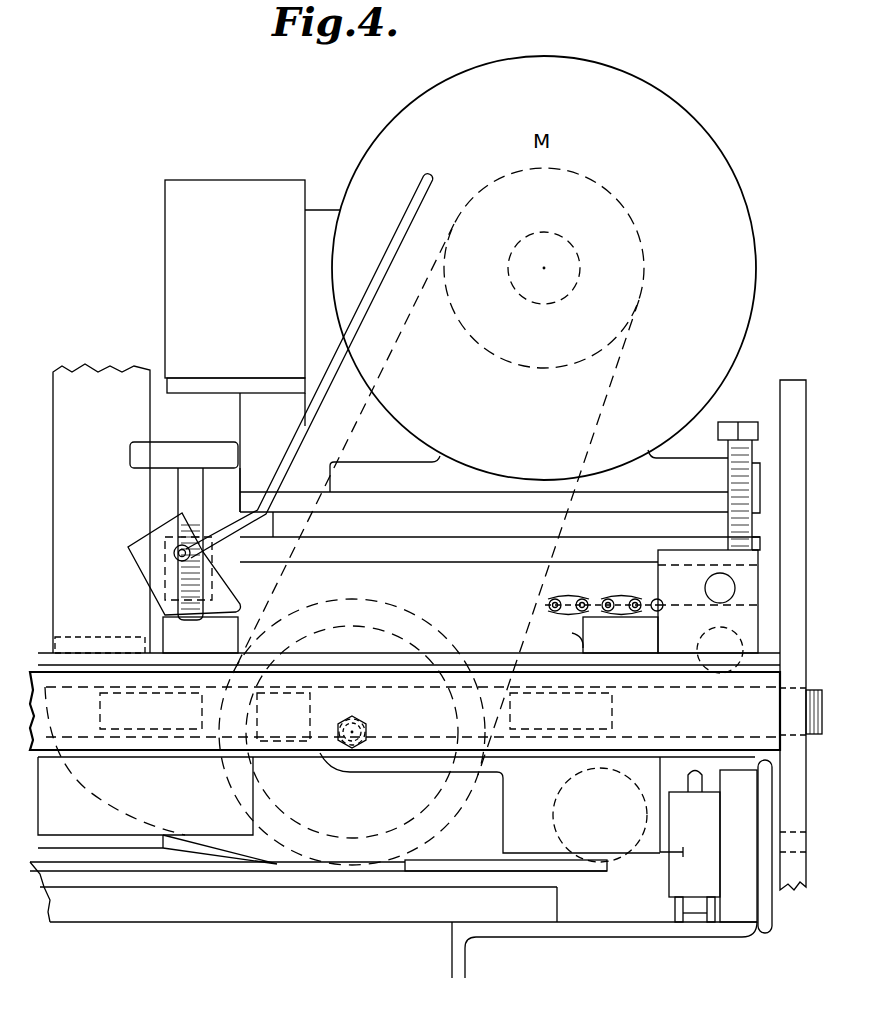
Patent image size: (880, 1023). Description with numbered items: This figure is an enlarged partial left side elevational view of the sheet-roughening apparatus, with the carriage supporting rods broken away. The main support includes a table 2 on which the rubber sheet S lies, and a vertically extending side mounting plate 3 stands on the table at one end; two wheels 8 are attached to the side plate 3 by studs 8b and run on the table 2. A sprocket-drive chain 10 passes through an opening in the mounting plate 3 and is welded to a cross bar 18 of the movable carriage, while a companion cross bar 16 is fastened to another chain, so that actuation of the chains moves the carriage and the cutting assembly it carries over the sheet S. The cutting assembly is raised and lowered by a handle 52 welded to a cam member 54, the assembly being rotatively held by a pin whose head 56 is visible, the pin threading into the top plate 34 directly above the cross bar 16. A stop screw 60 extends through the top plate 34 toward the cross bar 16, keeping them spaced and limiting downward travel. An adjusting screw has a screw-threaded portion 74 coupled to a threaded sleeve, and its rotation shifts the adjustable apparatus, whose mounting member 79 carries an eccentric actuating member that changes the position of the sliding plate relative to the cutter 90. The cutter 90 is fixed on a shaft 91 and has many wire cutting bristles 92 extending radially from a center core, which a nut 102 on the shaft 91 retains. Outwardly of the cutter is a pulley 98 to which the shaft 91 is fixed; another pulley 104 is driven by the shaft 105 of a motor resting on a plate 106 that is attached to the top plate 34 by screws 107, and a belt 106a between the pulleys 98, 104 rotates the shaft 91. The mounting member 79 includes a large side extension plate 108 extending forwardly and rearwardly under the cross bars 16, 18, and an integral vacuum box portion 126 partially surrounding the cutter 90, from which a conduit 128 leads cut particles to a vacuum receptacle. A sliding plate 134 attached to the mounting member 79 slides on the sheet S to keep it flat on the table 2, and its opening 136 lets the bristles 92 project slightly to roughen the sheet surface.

The table 2 is at (522, 930).
The side mounting plate 3 is at (794, 532).
The wheels 8 is at (727, 868).
The studs 8b is at (787, 890).
The sprocket-drive chain 10 is at (588, 598).
The cross bar 16 is at (200, 635).
The cross bar 18 is at (670, 611).
The top plate 34 is at (640, 534).
The handle 52 is at (405, 232).
The cam member 54 is at (215, 586).
The head 56 is at (176, 551).
The stop screw 60 is at (185, 490).
The screw-threaded portion 74 is at (164, 606).
The mounting member 79 is at (90, 802).
The cutter 90 is at (240, 788).
The shaft 91 is at (362, 728).
The wire cutting bristles 92 is at (356, 872).
The pulley 98 is at (405, 648).
The nut 102 is at (362, 716).
The pulley 104 is at (650, 256).
The motor shaft 105 is at (536, 236).
The plate 106 is at (690, 506).
The belt 106a is at (604, 391).
The screws 107 is at (748, 420).
The side extension plate 108 is at (561, 637).
The vacuum box portion 126 is at (77, 614).
The conduit 128 is at (114, 370).
The sliding plate 134 is at (450, 866).
The opening 136 is at (282, 866).
The rubber sheet S is at (125, 868).